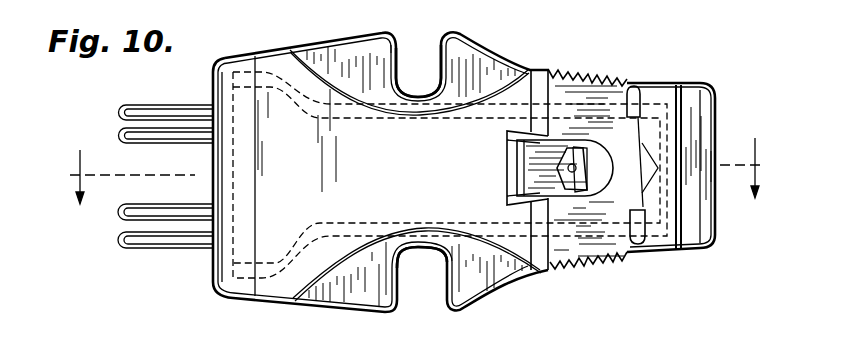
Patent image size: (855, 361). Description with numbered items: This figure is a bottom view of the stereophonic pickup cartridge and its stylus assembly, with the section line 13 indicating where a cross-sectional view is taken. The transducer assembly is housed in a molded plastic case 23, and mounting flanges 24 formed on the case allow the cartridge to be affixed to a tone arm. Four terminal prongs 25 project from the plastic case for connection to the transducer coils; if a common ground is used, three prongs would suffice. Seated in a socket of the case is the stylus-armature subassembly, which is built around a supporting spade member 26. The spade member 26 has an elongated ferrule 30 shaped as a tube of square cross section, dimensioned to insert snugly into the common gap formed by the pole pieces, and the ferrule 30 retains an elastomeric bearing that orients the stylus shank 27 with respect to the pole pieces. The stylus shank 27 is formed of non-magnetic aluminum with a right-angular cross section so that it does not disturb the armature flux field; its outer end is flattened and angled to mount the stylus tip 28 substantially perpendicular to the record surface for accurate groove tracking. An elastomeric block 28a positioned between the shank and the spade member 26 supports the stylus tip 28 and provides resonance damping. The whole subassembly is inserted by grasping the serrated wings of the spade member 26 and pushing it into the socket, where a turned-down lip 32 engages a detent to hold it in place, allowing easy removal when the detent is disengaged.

The section line 13- 13 is at (415, 171).
The molded plastic case 23 is at (528, 82).
The mounting flanges 24 is at (462, 48).
The terminal prongs 25 is at (166, 137).
The supporting spade member 26 is at (604, 127).
The stylus shank 27 is at (511, 195).
The stylus tip 28 is at (575, 173).
The elastomeric block 28a is at (580, 181).
The ferrule 30 is at (512, 142).
The turned-down lip 32 is at (643, 210).